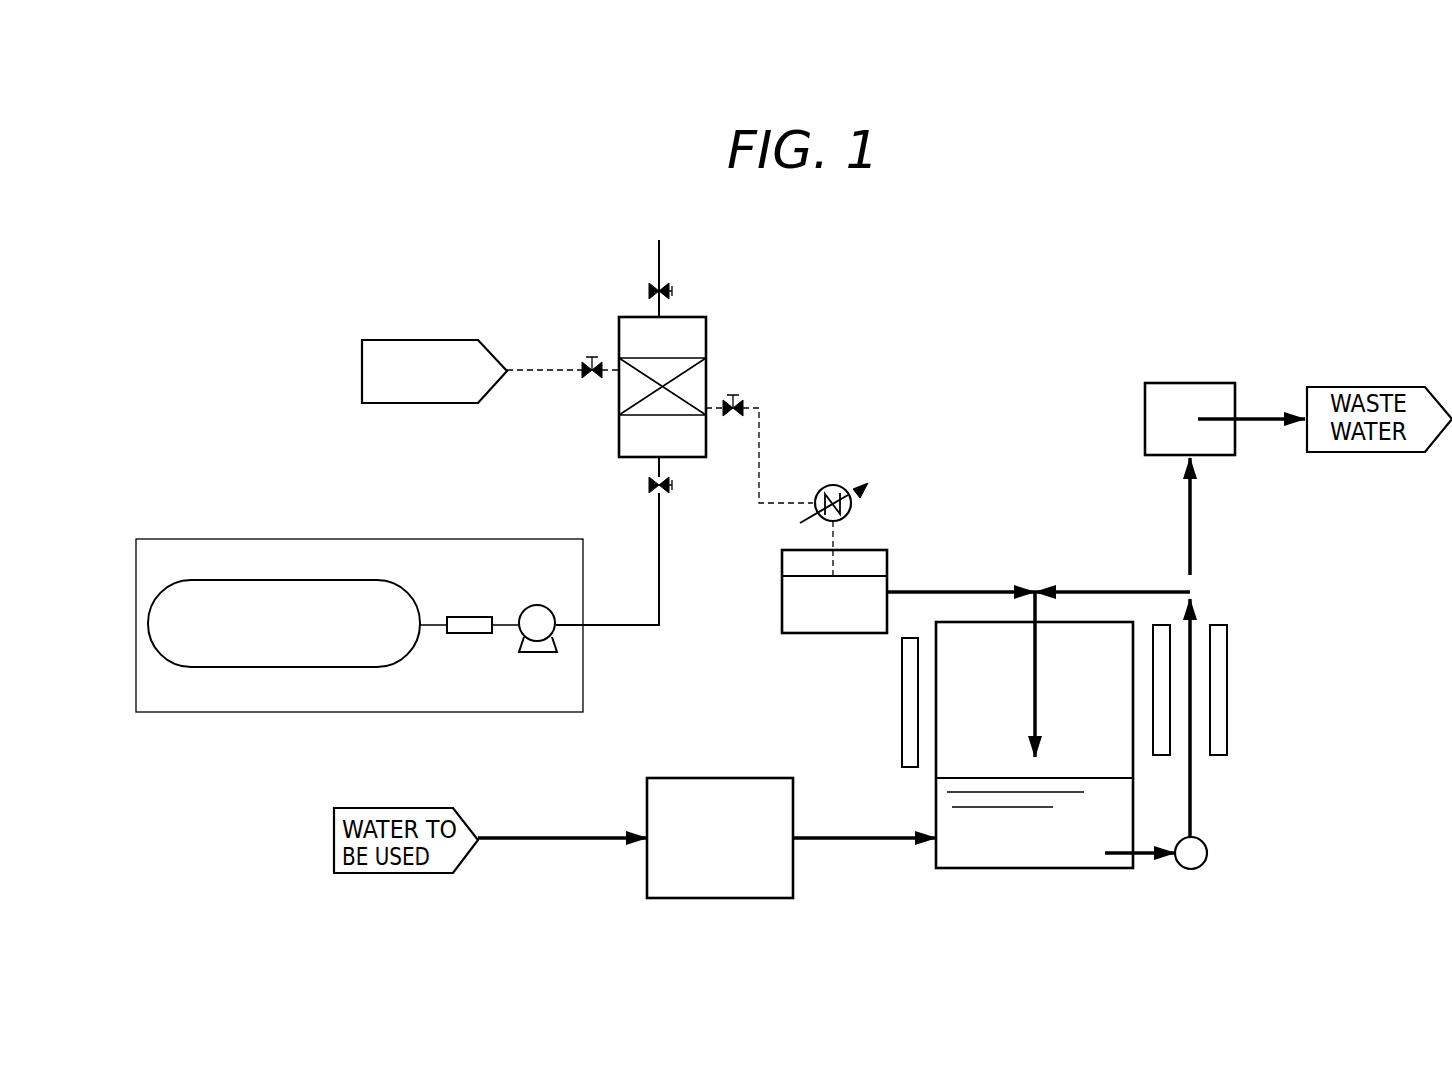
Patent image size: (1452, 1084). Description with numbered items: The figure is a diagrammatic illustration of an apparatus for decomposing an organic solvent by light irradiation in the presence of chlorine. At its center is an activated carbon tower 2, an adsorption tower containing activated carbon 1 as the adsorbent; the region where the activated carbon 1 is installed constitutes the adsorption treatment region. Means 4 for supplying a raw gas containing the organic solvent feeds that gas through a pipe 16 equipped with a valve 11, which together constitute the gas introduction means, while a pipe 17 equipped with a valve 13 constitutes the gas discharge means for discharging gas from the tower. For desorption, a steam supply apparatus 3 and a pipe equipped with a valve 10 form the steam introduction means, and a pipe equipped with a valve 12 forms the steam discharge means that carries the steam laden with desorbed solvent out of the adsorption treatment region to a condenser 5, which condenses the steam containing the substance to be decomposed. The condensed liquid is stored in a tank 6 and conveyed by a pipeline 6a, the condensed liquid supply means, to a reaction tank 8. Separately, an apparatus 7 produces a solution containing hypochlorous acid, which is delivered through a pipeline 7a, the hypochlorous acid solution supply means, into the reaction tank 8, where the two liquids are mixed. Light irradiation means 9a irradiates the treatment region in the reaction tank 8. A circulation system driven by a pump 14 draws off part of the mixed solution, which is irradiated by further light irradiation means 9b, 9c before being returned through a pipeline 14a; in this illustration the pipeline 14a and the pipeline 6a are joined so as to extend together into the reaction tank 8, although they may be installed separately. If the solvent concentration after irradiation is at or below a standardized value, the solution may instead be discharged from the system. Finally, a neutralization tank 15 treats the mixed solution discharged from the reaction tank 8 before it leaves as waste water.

The activated carbon 1 is at (706, 382).
The activated carbon tower 2 is at (706, 341).
The steam supply apparatus 3 is at (440, 340).
The means for supplying a raw gas 4 is at (528, 539).
The condenser 5 is at (837, 488).
The tank 6 is at (808, 635).
The pipeline 6a is at (950, 592).
The apparatus for producing a solution containing hypochlorous acid 7 is at (740, 778).
The pipeline 7a is at (852, 838).
The reaction tank 8 is at (968, 868).
The light irradiation means 9a is at (902, 676).
The light irradiation means 9b is at (1162, 756).
The light irradiation means 9c is at (1218, 756).
The valve 10 is at (592, 382).
The valve 11 is at (648, 486).
The valve 12 is at (733, 420).
The valve 13 is at (677, 291).
The pump 14 is at (1190, 868).
The pipeline 14a is at (1114, 592).
The neutralization tank 15 is at (1191, 384).
The pipe 16 is at (661, 549).
The pipe 17 is at (664, 258).